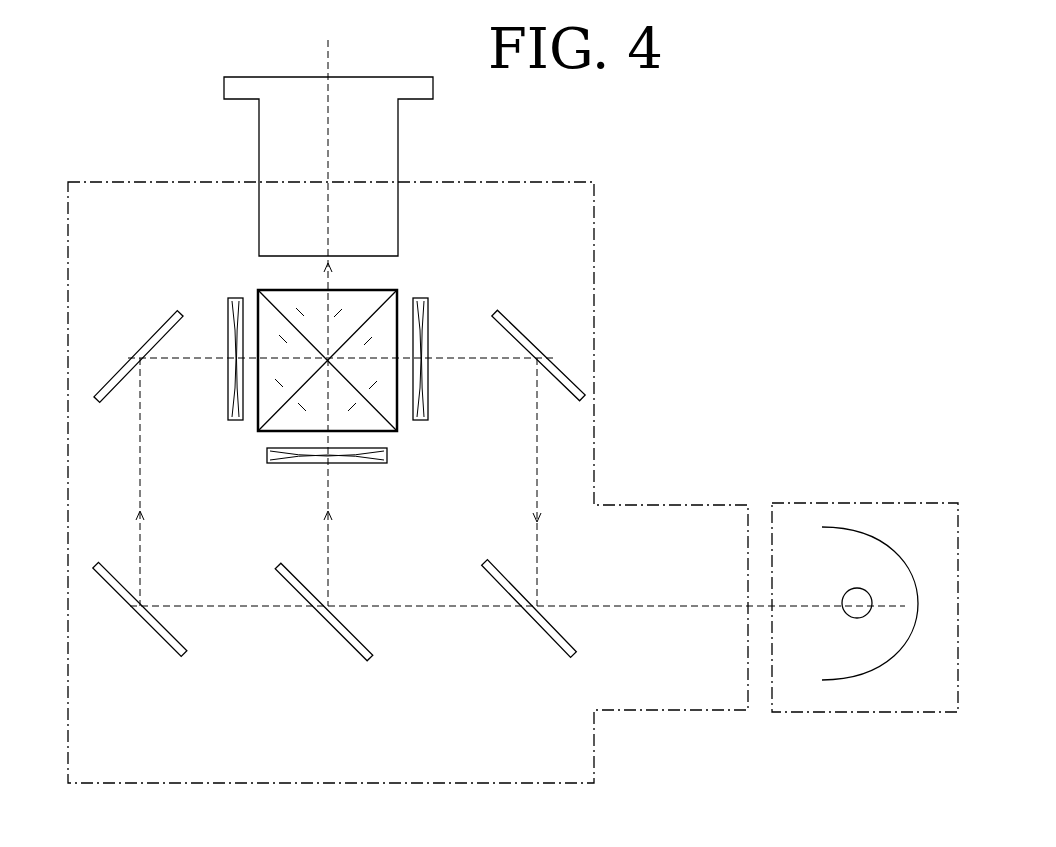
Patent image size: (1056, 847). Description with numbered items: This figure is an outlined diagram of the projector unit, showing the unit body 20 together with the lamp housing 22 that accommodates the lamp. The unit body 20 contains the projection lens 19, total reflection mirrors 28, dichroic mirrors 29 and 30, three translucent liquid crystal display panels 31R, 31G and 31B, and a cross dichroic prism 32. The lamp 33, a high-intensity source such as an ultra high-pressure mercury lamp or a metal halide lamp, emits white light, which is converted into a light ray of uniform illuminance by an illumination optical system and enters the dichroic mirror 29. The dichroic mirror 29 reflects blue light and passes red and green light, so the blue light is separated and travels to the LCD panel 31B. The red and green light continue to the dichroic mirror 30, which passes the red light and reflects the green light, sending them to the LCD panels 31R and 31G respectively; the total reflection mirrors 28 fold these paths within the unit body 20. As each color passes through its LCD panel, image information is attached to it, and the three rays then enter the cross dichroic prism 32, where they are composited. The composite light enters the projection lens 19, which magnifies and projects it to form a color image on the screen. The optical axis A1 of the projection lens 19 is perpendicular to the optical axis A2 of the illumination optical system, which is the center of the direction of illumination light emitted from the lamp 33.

The projection lens 19 is at (387, 143).
The unit body 20 is at (594, 275).
The lamp housing 22 is at (864, 503).
The total reflection mirrors 28 is at (150, 334).
The dichroic mirror 29 is at (537, 625).
The dichroic mirror 30 is at (328, 628).
The LCD panel 31R is at (234, 298).
The LCD panel 31B is at (422, 298).
The LCD panel 31G is at (267, 456).
The cross dichroic prism 32 is at (397, 428).
The lamp 33 is at (872, 603).
The optical axis of the projection lens A1 is at (330, 48).
The optical axis of the illumination optical system A2 is at (684, 604).